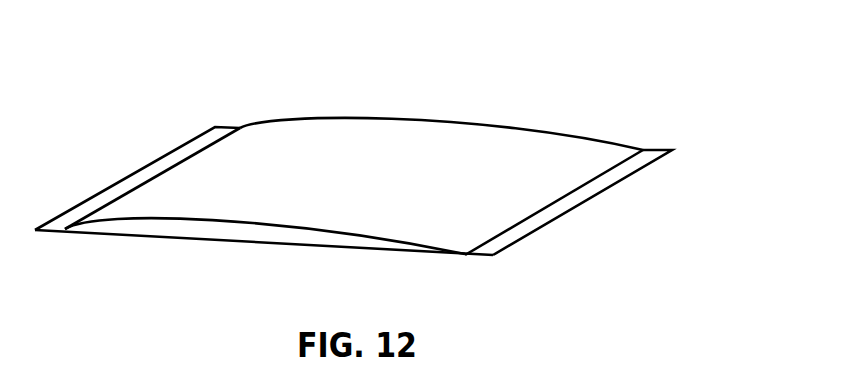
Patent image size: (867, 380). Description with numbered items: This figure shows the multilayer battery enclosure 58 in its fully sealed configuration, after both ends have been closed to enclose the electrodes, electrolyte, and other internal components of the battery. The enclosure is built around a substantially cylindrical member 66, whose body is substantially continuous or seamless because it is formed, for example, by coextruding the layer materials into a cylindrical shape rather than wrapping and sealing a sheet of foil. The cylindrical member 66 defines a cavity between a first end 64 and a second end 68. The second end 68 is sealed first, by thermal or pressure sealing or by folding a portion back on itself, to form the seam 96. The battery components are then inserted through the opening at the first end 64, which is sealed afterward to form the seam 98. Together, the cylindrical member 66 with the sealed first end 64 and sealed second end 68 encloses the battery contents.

The multilayer battery enclosure 58 is at (365, 68).
The substantially cylindrical member 66 is at (360, 186).
The second end 68 is at (136, 136).
The seam 96 is at (95, 203).
The first end 64 is at (650, 192).
The seam 98 is at (533, 223).